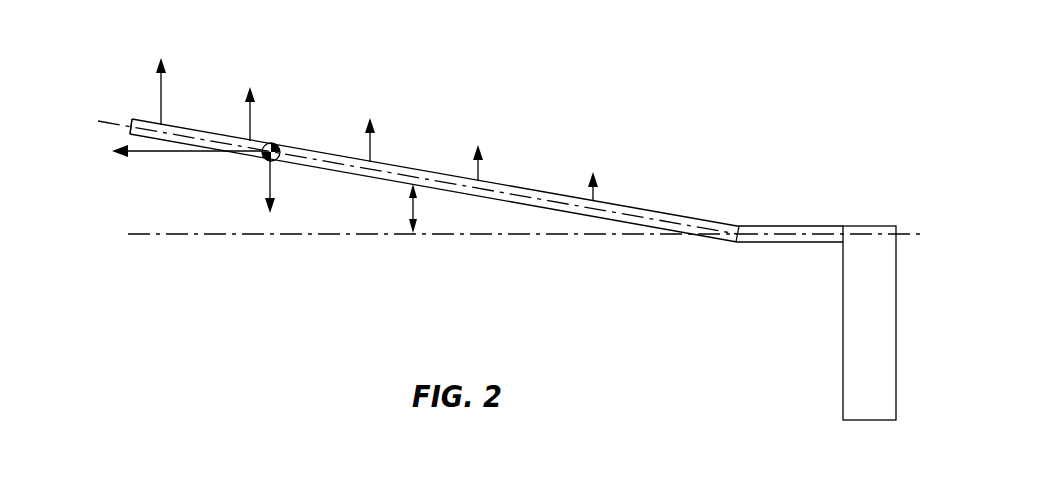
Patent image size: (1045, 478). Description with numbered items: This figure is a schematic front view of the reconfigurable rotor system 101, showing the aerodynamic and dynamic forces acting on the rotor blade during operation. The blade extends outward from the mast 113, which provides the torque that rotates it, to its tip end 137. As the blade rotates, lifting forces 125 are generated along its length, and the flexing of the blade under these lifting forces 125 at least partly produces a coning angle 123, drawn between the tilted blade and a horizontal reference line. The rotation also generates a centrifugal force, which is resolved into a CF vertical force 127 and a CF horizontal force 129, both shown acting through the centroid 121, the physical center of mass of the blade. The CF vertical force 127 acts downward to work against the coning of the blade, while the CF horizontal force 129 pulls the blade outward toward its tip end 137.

The reconfigurable rotor system 101 is at (440, 92).
The mast 113 is at (843, 380).
The centroid 121 is at (285, 162).
The coning angle 123 is at (418, 221).
The lifting forces 125 is at (483, 158).
The CF vertical force 127 is at (276, 170).
The CF horizontal force 129 is at (157, 153).
The tip end 137 is at (126, 114).